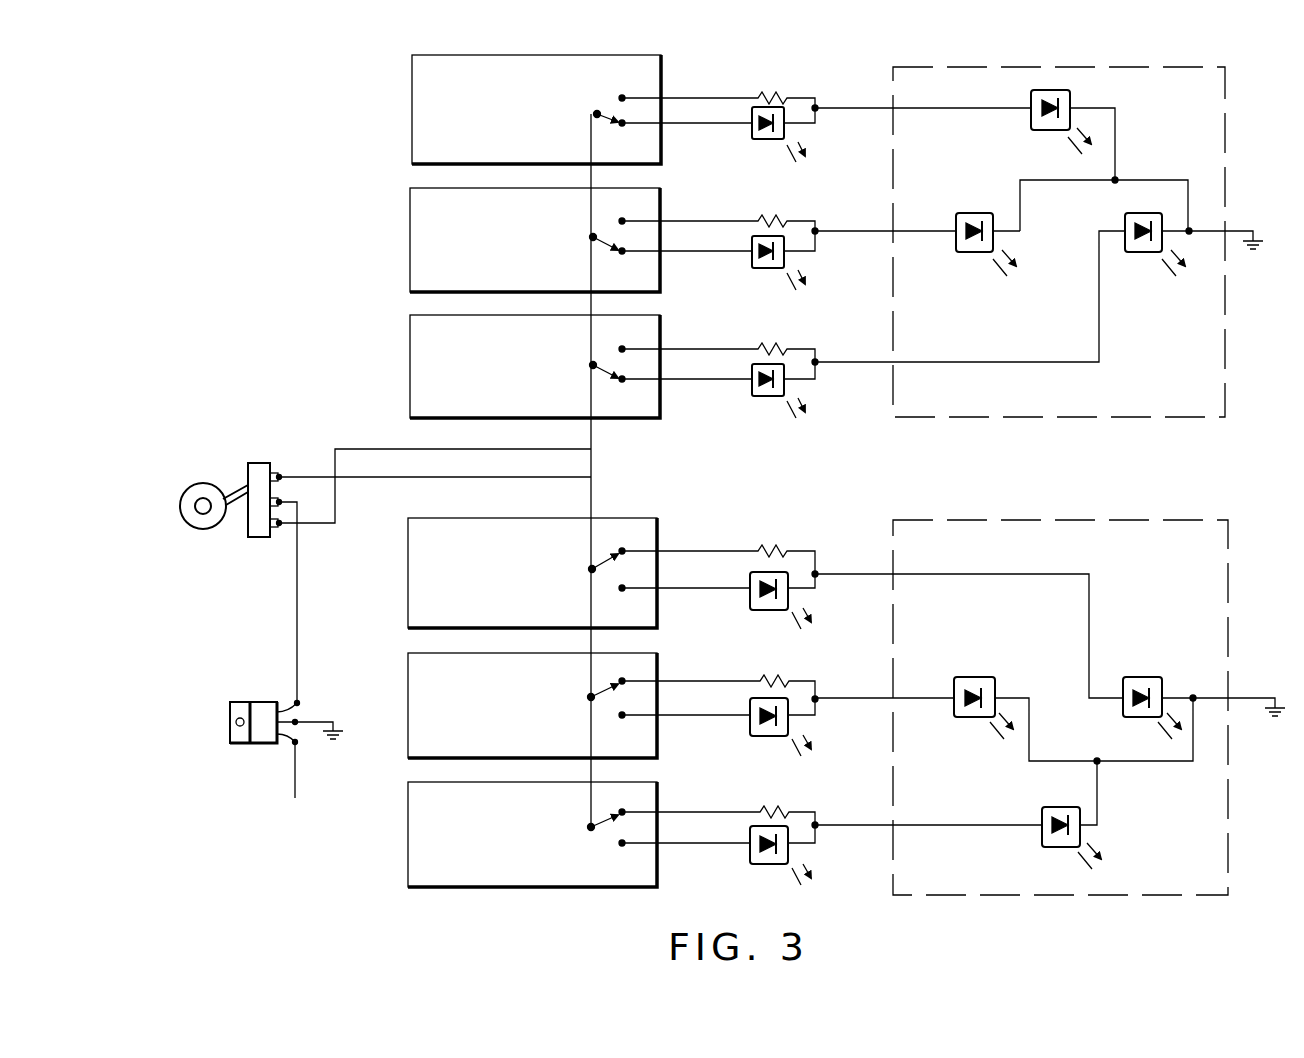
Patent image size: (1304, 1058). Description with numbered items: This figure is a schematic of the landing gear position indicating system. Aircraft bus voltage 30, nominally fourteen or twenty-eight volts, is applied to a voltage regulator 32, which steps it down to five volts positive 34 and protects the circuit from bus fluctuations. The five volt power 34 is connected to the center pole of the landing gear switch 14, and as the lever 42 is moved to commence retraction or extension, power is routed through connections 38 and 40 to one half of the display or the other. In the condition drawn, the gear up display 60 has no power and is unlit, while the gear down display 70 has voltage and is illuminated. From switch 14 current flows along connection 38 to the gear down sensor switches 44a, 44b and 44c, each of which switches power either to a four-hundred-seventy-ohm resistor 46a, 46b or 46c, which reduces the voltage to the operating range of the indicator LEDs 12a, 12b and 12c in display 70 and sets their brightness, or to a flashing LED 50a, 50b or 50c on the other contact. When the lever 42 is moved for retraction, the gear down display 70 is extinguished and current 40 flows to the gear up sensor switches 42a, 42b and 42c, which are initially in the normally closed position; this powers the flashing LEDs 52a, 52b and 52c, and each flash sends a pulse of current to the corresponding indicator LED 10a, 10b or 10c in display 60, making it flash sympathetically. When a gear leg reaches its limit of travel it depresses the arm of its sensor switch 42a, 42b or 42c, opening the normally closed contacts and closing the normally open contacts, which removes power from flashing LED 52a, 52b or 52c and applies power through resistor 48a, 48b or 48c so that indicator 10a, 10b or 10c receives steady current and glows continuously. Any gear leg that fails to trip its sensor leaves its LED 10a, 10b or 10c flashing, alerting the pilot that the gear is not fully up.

The indicator LED 10a is at (1031, 128).
The indicator LED 10b is at (966, 252).
The indicator LED 10c is at (1125, 222).
The indicator LED 12a is at (1058, 807).
The indicator LED 12b is at (973, 677).
The indicator LED 12c is at (1141, 677).
The landing gear switch 14 is at (258, 463).
The aircraft bus voltage 30 is at (295, 780).
The voltage regulator 32 is at (230, 723).
The 5 volt power 34 is at (297, 577).
The connection 38 is at (312, 477).
The current 40 is at (360, 448).
The lever 42 is at (208, 483).
The gear up sensor switch 42a is at (412, 122).
The gear up sensor switch 42b is at (410, 240).
The gear up sensor switch 42c is at (410, 362).
The sensor switch 44a is at (408, 845).
The sensor switch 44b is at (408, 700).
The sensor switch 44c is at (408, 570).
The 470-ohm resistor 46a is at (760, 810).
The 470-ohm resistor 46b is at (760, 679).
The 470-ohm resistor 46c is at (758, 549).
The resistor 48a is at (757, 96).
The resistor 48b is at (757, 219).
The resistor 48c is at (757, 347).
The flashing LED 50a is at (750, 838).
The flashing LED 50b is at (750, 708).
The flashing LED 50c is at (750, 580).
The flashing LED 52a is at (750, 118).
The flashing LED 52b is at (750, 244).
The flashing LED 52c is at (752, 372).
The gear up display 60 is at (1228, 308).
The gear down display 70 is at (1232, 635).